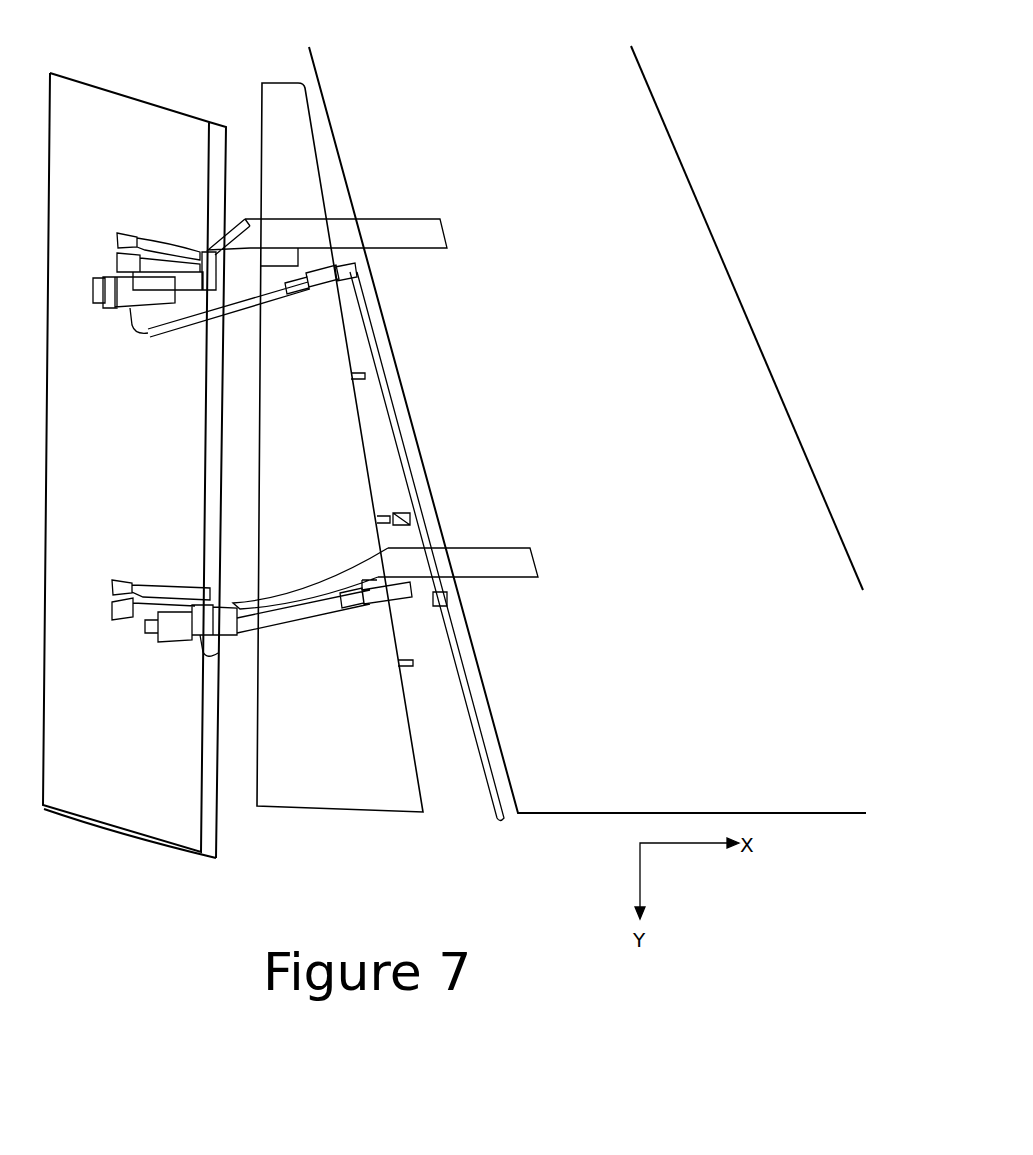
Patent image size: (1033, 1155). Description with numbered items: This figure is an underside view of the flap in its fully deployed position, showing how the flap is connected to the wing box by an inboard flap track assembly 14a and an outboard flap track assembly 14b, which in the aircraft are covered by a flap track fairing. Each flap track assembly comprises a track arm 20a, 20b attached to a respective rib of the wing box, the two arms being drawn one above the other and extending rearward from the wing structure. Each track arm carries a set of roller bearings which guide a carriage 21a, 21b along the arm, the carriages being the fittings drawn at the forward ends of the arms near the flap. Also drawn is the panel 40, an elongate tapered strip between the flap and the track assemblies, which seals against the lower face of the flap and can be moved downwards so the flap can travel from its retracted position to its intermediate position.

The track arm 20a is at (312, 580).
The track arm 20b is at (212, 248).
The carriage 21a is at (193, 648).
The carriage 21b is at (128, 300).
The inboard flap track assembly 14a is at (300, 665).
The outboard flap track assembly 14b is at (302, 330).
The panel 40 is at (330, 794).